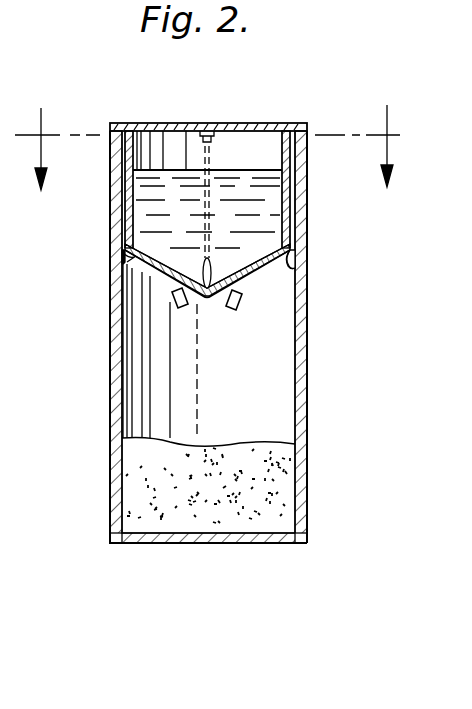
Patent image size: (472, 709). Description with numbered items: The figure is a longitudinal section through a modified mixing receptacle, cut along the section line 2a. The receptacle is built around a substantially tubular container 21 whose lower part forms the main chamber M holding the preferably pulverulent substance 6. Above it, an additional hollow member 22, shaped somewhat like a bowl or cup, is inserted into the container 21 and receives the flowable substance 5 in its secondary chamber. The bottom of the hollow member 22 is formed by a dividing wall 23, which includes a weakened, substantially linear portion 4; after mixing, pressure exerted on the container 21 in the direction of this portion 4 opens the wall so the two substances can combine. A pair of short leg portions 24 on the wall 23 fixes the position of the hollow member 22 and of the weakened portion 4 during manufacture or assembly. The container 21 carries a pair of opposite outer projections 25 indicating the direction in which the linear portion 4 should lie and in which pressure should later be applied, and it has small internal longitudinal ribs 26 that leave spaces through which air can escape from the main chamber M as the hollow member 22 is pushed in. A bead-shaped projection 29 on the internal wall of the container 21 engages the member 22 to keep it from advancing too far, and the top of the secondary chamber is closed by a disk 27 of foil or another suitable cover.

The section line 2a- 2a is at (212, 147).
The tubular container 21 is at (104, 413).
The hollow member 22 is at (296, 218).
The disk 27 is at (262, 123).
The weakened substantially linear portion 4 is at (214, 272).
The internal longitudinal ribs 26 is at (288, 186).
The bead-shaped projection 29 is at (122, 256).
The dividing wall 23 is at (296, 266).
The outer projections 25 is at (212, 134).
The leg portions 24 is at (186, 306).
The flowable substance 5 is at (158, 133).
The main chamber m is at (262, 392).
The pulverulent substance 6 is at (268, 482).